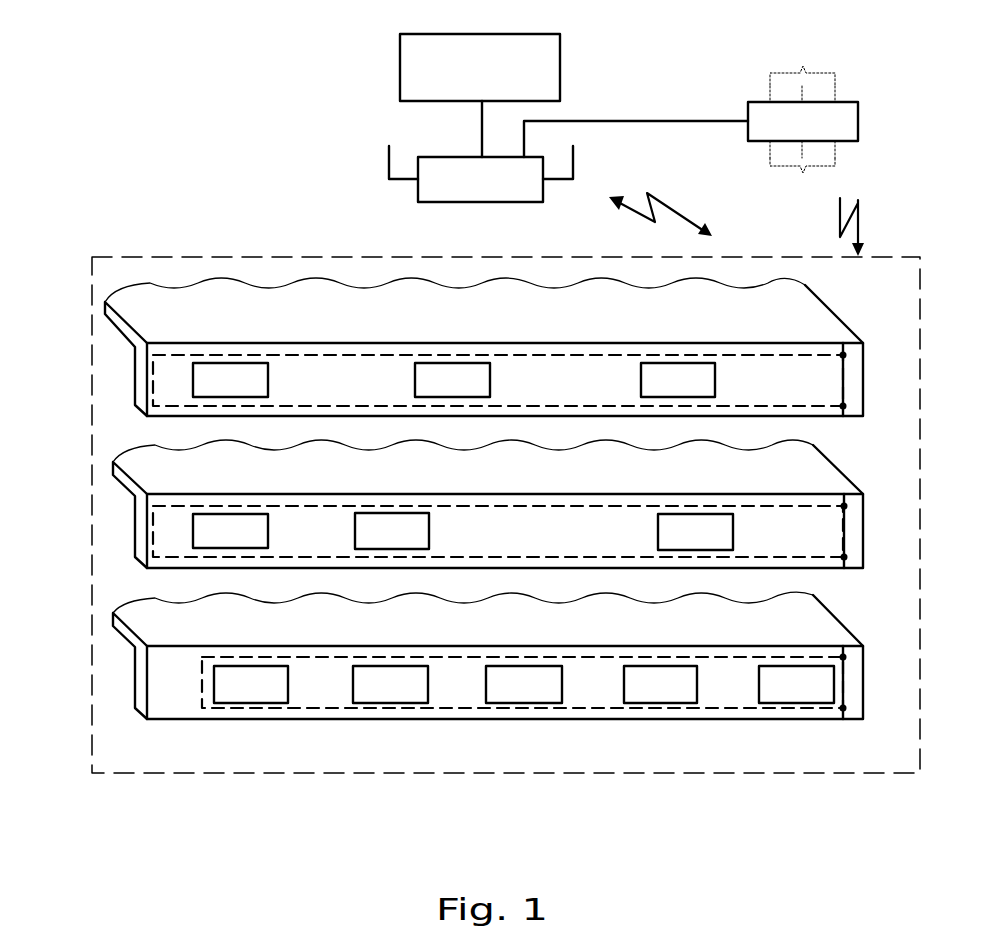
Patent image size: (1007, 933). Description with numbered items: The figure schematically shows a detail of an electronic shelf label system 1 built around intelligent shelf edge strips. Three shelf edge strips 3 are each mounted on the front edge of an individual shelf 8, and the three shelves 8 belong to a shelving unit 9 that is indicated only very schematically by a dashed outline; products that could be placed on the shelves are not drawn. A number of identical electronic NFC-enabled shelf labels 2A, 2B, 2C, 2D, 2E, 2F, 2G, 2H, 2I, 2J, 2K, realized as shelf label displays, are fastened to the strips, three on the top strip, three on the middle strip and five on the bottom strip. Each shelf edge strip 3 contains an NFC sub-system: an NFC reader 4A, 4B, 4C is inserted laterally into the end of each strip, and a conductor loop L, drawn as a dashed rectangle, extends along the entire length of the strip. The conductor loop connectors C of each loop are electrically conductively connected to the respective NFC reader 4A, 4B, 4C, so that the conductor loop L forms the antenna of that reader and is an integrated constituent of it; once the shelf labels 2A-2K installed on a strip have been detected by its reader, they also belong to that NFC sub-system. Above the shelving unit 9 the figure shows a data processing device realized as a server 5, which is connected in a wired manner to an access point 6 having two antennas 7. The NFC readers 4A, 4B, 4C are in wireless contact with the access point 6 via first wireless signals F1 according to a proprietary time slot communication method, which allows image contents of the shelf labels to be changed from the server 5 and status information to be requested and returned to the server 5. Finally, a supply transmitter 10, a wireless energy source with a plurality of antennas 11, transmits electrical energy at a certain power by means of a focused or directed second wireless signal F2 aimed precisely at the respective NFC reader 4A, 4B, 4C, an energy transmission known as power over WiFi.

The shelf label system 1 is at (270, 108).
The shelf label 2A is at (255, 373).
The shelf label 2B is at (478, 373).
The shelf label 2C is at (703, 373).
The shelf label 2D is at (255, 524).
The shelf label 2E is at (415, 524).
The shelf label 2F is at (720, 526).
The shelf label 2G is at (251, 684).
The shelf label 2H is at (390, 684).
The shelf label 2I is at (524, 684).
The shelf label 2J is at (660, 684).
The shelf label 2K is at (796, 684).
The shelf edge strip 3 is at (140, 378).
The NFC reader 4A is at (855, 383).
The NFC reader 4B is at (855, 536).
The NFC reader 4C is at (855, 687).
The server 5 is at (540, 58).
The access point 6 is at (433, 157).
The antenna 7 is at (389, 160).
The shelf 8 is at (122, 323).
The shelving unit 9 is at (226, 785).
The supply transmitter 10 is at (763, 108).
The antennas 11 is at (803, 66).
The conductor loop connector C is at (845, 355).
The conductor loop L is at (658, 406).
The first wireless signal F1 is at (664, 204).
The second wireless signal F2 is at (858, 200).